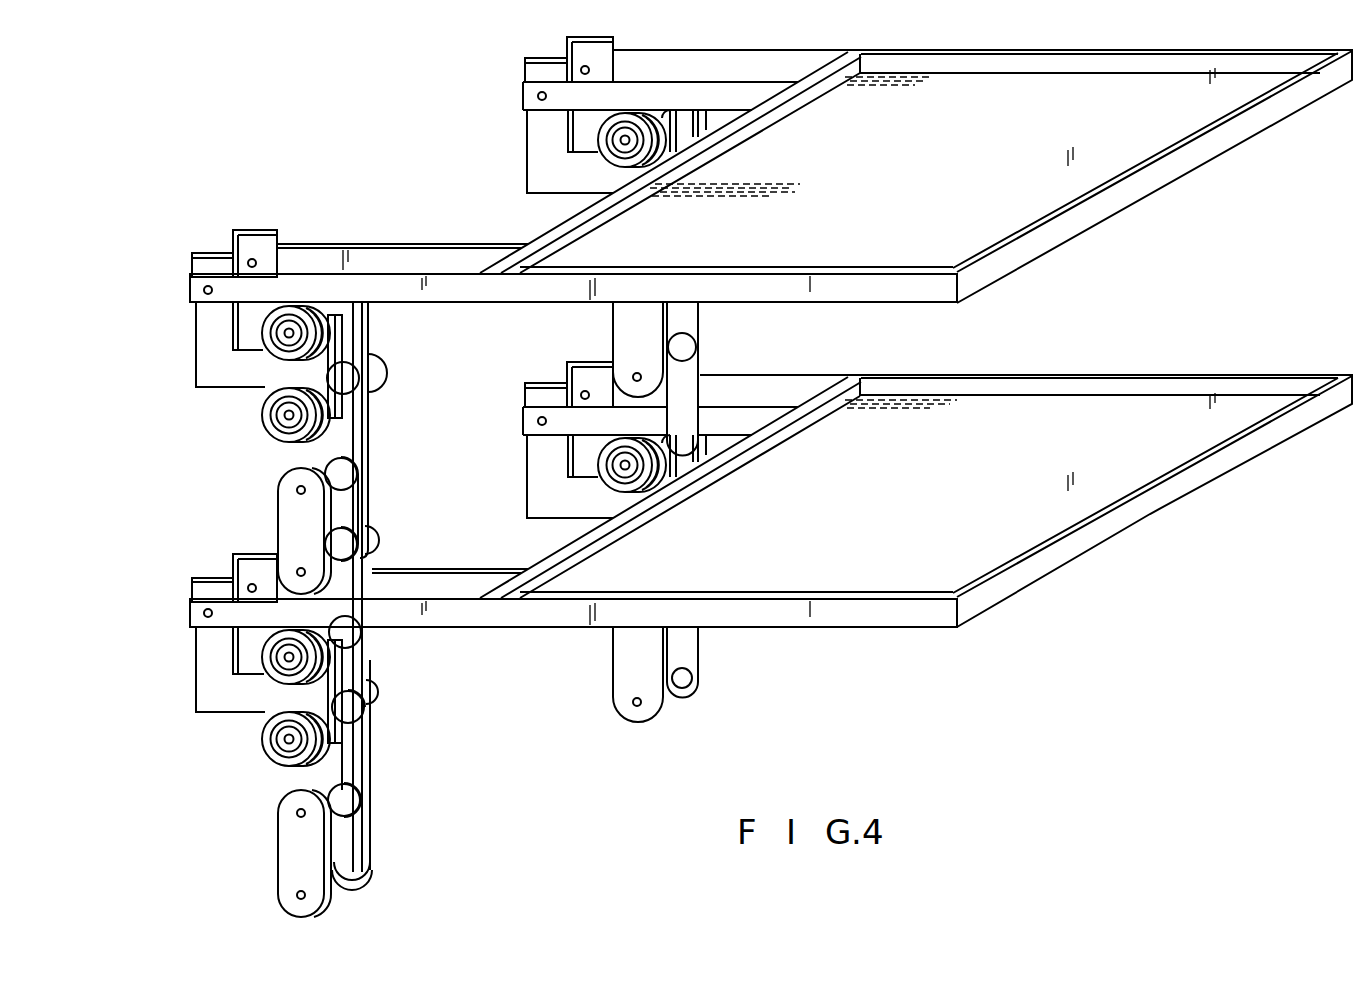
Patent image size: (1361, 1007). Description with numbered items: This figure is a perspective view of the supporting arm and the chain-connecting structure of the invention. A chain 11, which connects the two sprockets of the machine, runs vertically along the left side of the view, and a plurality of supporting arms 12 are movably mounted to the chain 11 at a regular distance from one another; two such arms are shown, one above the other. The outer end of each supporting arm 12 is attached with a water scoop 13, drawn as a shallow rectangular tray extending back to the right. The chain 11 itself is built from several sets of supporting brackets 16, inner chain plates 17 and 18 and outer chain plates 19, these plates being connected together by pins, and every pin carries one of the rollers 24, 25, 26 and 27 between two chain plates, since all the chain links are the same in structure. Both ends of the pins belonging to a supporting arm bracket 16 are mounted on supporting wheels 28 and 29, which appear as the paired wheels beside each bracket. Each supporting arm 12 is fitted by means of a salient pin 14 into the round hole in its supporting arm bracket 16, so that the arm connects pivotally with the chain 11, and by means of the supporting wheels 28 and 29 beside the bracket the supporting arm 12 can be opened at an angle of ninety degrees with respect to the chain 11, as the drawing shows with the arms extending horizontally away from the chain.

The chain 11 is at (257, 825).
The supporting arm 12 is at (510, 288).
The water scoop 13 is at (998, 227).
The salient pin 14 is at (200, 612).
The supporting bracket 16 is at (196, 360).
The inner chain plate 17 is at (348, 568).
The inner chain plate 18 is at (348, 759).
The outer chain plate 19 is at (288, 522).
The roller 24 is at (357, 632).
The roller 25 is at (350, 713).
The roller 26 is at (350, 795).
The roller 27 is at (347, 876).
The supporting wheel 28 is at (262, 656).
The supporting wheel 29 is at (262, 737).